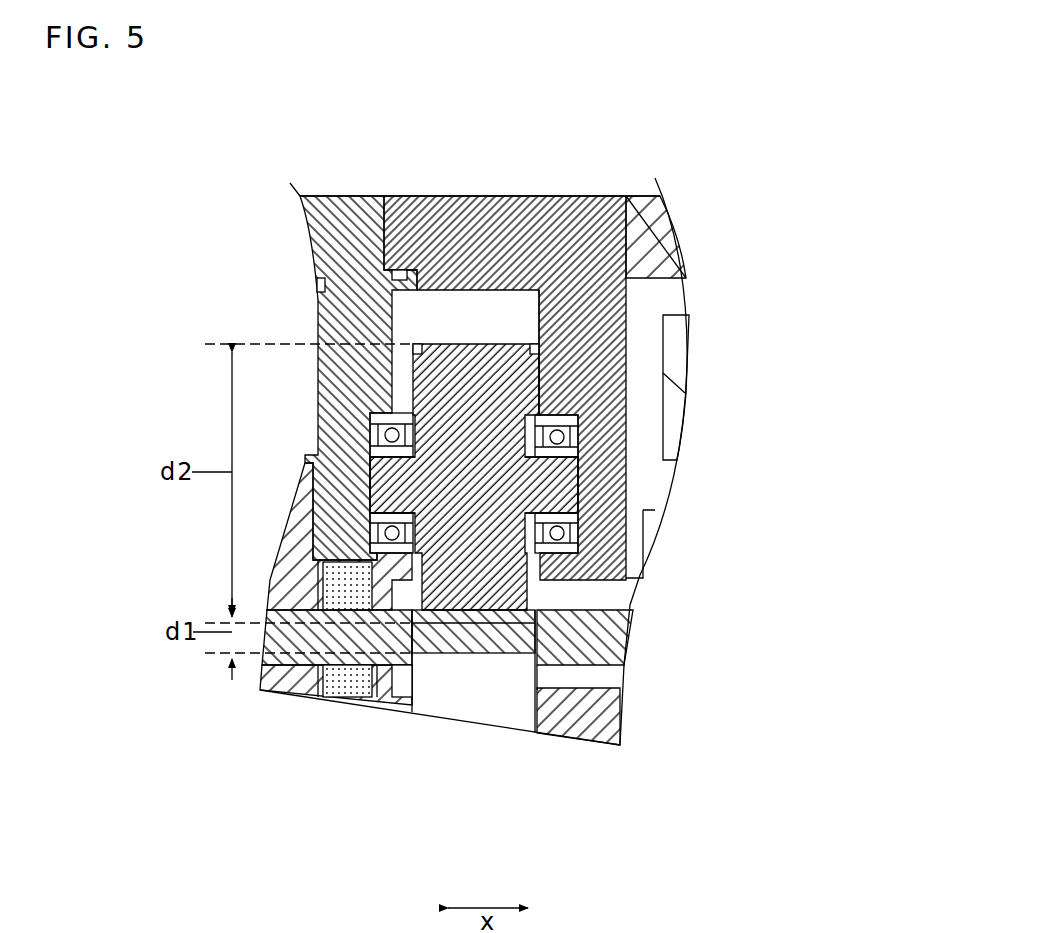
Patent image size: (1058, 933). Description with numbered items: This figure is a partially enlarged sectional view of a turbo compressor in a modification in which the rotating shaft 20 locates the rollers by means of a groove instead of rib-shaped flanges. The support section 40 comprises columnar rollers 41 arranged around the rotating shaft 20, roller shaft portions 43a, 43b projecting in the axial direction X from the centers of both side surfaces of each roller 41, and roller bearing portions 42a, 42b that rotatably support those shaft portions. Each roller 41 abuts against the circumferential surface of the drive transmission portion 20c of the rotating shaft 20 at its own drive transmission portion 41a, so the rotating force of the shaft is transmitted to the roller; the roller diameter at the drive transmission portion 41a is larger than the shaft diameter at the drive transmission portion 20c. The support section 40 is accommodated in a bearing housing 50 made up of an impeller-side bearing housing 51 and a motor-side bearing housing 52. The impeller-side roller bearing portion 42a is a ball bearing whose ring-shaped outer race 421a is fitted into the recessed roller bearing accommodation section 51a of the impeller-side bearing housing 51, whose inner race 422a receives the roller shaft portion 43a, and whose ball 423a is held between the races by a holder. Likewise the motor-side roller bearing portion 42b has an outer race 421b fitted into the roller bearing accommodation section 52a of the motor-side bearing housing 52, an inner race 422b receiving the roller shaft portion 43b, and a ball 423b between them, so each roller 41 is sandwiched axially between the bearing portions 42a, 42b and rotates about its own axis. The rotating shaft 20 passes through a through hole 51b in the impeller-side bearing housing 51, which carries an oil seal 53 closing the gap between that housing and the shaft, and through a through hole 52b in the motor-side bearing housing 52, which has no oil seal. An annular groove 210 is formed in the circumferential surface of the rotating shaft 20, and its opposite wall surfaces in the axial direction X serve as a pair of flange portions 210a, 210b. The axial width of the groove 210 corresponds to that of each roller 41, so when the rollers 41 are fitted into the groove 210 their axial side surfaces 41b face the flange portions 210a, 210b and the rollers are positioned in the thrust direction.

The rotating shaft 20 is at (517, 635).
The drive transmission portion 20c is at (497, 612).
The support section 40 is at (491, 468).
The roller 41 is at (491, 477).
The drive transmission portion 41a is at (457, 654).
The side face of rotor 41b is at (400, 613).
The roller bearing portion 42a is at (269, 382).
The outer race 421a is at (393, 414).
The inner race 422a is at (394, 452).
The ball 423a is at (396, 430).
The roller bearing portion 42b is at (700, 484).
The outer race 421b is at (565, 421).
The inner race 422b is at (565, 452).
The ball 423b is at (562, 437).
The roller shaft portion 43a is at (385, 470).
The roller shaft portion 43b is at (563, 488).
The bearing housing 50 is at (446, 335).
The impeller-side bearing housing 51 is at (360, 212).
The roller bearing accommodation section 51a is at (362, 487).
The through hole 51b is at (325, 683).
The motor-side bearing housing 52 is at (405, 212).
The roller bearing accommodation section 52a is at (560, 404).
The through hole 52b is at (595, 680).
The oil seal 53 is at (352, 690).
The annular groove 210 is at (578, 520).
The flange portion 210a is at (400, 613).
The flange portion 210b is at (462, 614).